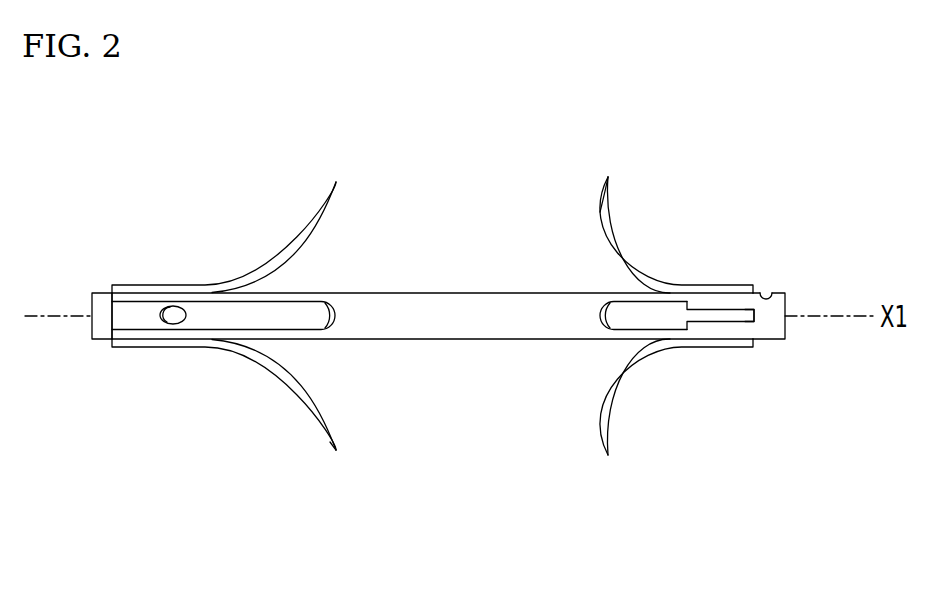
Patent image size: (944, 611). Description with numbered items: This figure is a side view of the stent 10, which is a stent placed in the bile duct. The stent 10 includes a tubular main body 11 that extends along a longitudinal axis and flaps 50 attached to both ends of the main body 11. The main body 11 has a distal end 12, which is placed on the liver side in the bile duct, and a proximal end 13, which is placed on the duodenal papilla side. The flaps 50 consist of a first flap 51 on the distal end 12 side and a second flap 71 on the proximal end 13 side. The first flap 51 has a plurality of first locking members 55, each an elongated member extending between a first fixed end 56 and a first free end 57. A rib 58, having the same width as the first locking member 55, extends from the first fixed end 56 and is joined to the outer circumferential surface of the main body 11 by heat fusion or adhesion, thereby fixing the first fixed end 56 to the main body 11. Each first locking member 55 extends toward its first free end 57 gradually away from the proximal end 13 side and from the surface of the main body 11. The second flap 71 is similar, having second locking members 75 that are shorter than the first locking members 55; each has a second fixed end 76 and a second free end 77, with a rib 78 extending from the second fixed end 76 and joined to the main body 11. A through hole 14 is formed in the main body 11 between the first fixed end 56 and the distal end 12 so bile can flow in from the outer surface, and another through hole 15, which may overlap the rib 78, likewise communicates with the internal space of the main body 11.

The stent 10 is at (752, 188).
The main body 11 is at (461, 298).
The distal end 12 is at (94, 292).
The proximal end 13 is at (786, 340).
The through hole 14 is at (163, 318).
The through hole 15 is at (767, 291).
The flap 50 is at (433, 321).
The first flap 51 is at (267, 427).
The first locking member 55 is at (288, 307).
The first fixed end 56 is at (205, 324).
The first free end 57 is at (337, 451).
The rib 58 is at (134, 316).
The second flap 71 is at (639, 430).
The second locking member 75 is at (643, 309).
The second fixed end 76 is at (690, 307).
The second free end 77 is at (606, 200).
The rib 78 is at (730, 321).